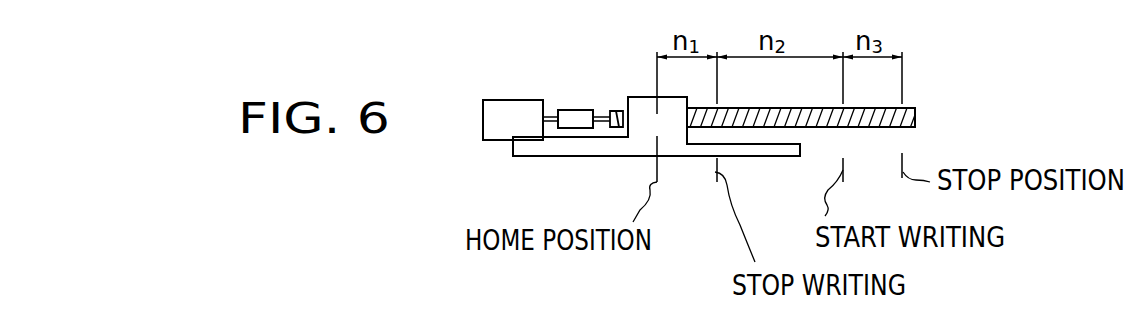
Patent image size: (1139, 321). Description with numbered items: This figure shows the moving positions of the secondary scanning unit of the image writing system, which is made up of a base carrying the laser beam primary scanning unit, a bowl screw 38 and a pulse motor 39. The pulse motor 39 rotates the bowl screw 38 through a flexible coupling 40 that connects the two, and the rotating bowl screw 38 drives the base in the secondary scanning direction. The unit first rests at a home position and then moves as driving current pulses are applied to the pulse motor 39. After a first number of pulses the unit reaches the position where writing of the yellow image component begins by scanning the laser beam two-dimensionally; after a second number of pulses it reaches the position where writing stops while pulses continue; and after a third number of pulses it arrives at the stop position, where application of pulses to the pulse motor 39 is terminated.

The bowl screw 38 is at (915, 108).
The pulse motor 39 is at (508, 110).
The flexible coupling 40 is at (573, 117).